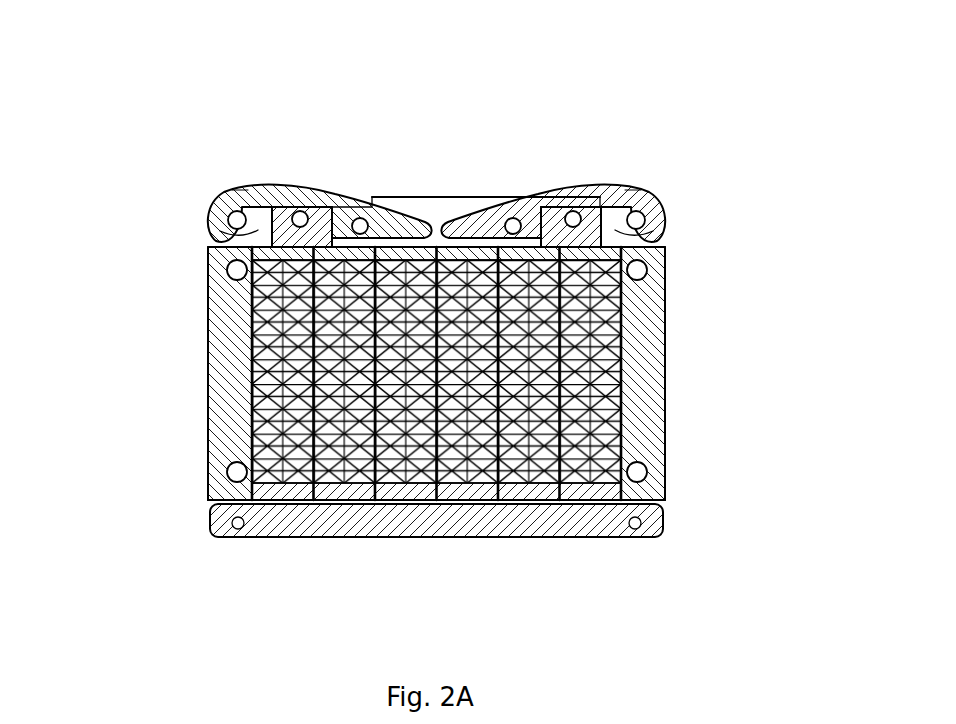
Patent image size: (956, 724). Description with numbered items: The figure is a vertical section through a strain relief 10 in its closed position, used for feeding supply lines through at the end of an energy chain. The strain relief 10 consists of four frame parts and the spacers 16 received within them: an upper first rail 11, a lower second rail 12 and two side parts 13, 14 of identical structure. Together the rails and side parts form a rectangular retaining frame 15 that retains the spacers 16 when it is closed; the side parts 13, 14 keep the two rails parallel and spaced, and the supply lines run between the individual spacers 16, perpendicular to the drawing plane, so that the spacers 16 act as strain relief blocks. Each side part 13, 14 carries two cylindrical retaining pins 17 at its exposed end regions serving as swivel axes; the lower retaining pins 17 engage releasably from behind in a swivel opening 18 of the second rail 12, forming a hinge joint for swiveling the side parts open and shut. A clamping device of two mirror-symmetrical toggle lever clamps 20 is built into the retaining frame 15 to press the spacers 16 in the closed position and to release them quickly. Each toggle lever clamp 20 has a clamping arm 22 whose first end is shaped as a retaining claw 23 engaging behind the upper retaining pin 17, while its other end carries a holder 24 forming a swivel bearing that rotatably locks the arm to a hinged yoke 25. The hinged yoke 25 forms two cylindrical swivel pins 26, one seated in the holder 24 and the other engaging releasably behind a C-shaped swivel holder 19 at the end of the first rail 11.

The strain relief 10 is at (106, 76).
The first rail 11 is at (433, 205).
The second rail 12 is at (455, 540).
The side part 13 is at (218, 350).
The side part 14 is at (655, 345).
The retaining frame 15 is at (822, 195).
The spacer 16 is at (395, 493).
The retaining pin 17 is at (240, 196).
The swivel opening 18 is at (246, 530).
The swivel holder 19 is at (212, 240).
The toggle lever clamp 20 is at (290, 108).
The clamping arm 22 is at (318, 190).
The retaining claw 23 is at (224, 212).
The holder 24 is at (372, 203).
The hinged yoke 25 is at (334, 222).
The swivel pin 26 is at (297, 210).